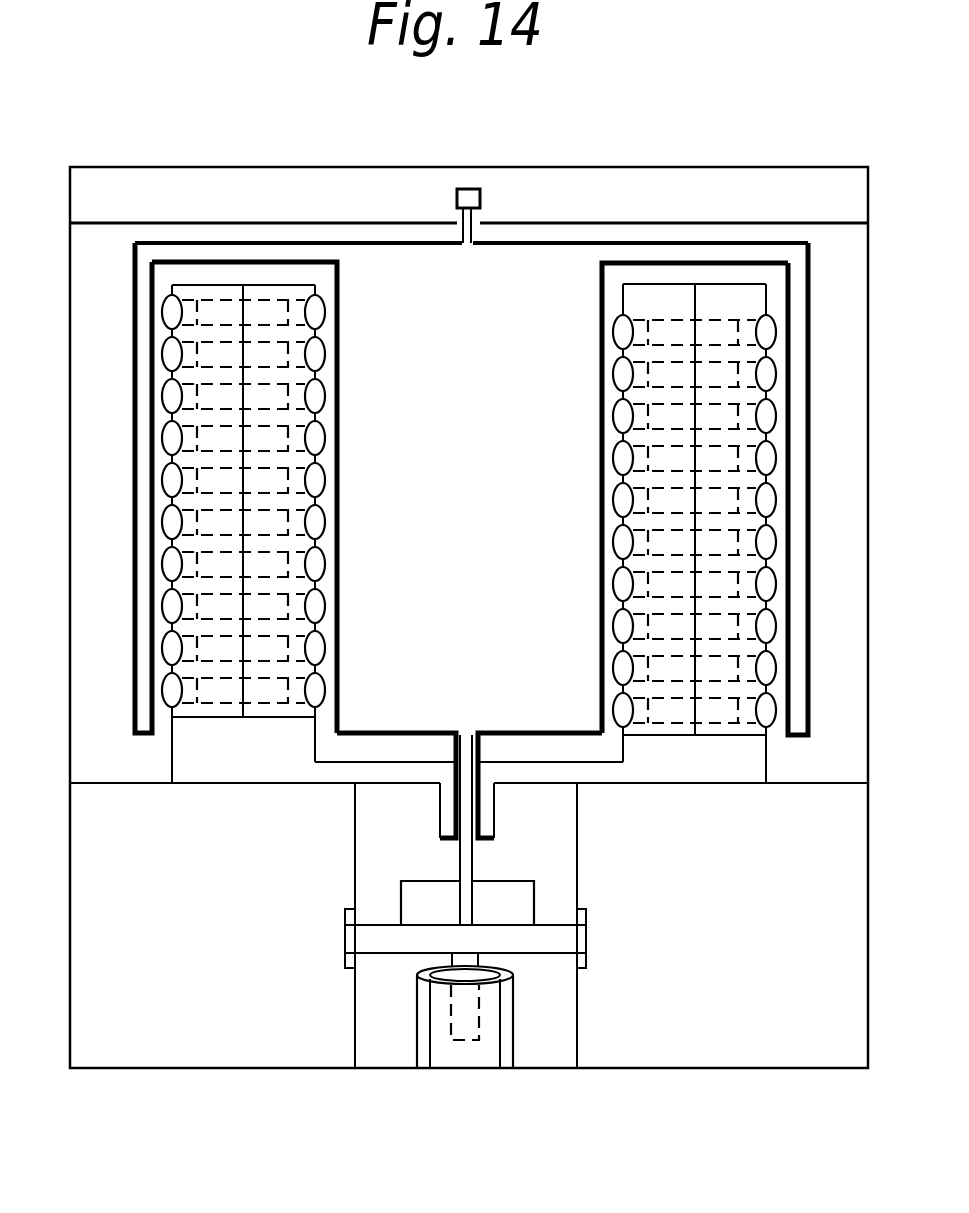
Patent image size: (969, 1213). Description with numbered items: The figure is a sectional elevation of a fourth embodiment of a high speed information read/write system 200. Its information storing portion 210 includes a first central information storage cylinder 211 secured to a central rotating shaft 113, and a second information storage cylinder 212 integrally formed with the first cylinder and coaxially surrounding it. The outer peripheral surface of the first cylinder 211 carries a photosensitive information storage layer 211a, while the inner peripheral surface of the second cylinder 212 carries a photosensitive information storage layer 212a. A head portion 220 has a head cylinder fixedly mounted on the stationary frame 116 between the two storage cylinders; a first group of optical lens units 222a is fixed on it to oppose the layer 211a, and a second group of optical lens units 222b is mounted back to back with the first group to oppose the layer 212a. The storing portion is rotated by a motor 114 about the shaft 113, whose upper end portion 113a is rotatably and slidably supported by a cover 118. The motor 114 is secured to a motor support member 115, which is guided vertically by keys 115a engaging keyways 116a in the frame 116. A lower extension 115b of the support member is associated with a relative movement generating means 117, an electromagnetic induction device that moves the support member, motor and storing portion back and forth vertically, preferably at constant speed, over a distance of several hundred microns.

The high speed information read/write system 200 is at (65, 250).
The cover 118 is at (820, 186).
The central rotating shaft 113 is at (480, 232).
The upper end portion of the central shaft 113a is at (457, 211).
The information storing portion 210 is at (545, 265).
The first central information storage cylinder 211 is at (363, 717).
The photosensitive information storage layer 211a is at (607, 278).
The second information storage cylinder 212 is at (140, 642).
The photosensitive information storage layer 212a is at (783, 695).
The head portion 220 is at (168, 752).
The first group of optical lens units 222a is at (317, 376).
The second group of optical lens units 222b is at (170, 672).
The stationary frame 116 is at (800, 1050).
The keyways 116a is at (578, 913).
The motor support member 115 is at (380, 930).
The keys 115a is at (347, 940).
The lower extension of the motor support member 115b is at (468, 962).
The motor 114 is at (502, 898).
The relative movement generating means 117 is at (503, 1037).